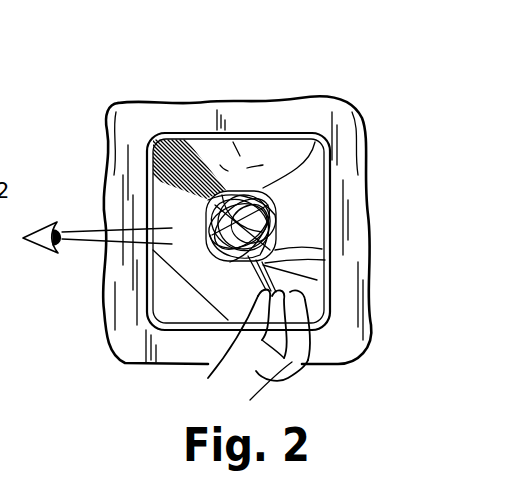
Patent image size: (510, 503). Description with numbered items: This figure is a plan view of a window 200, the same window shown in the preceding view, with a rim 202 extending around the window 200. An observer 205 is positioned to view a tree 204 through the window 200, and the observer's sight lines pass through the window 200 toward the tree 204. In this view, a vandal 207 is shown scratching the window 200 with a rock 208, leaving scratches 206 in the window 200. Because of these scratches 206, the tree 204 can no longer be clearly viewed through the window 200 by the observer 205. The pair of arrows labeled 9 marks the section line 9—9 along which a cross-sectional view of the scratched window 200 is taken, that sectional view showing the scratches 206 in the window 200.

The window 200 is at (303, 187).
The rim 202 is at (326, 202).
The tree 204 is at (320, 131).
The observer 205 is at (36, 250).
The scratches 206 is at (283, 222).
The vandal 207 is at (285, 380).
The rock 208 is at (330, 262).
The line 9- 9 is at (208, 215).